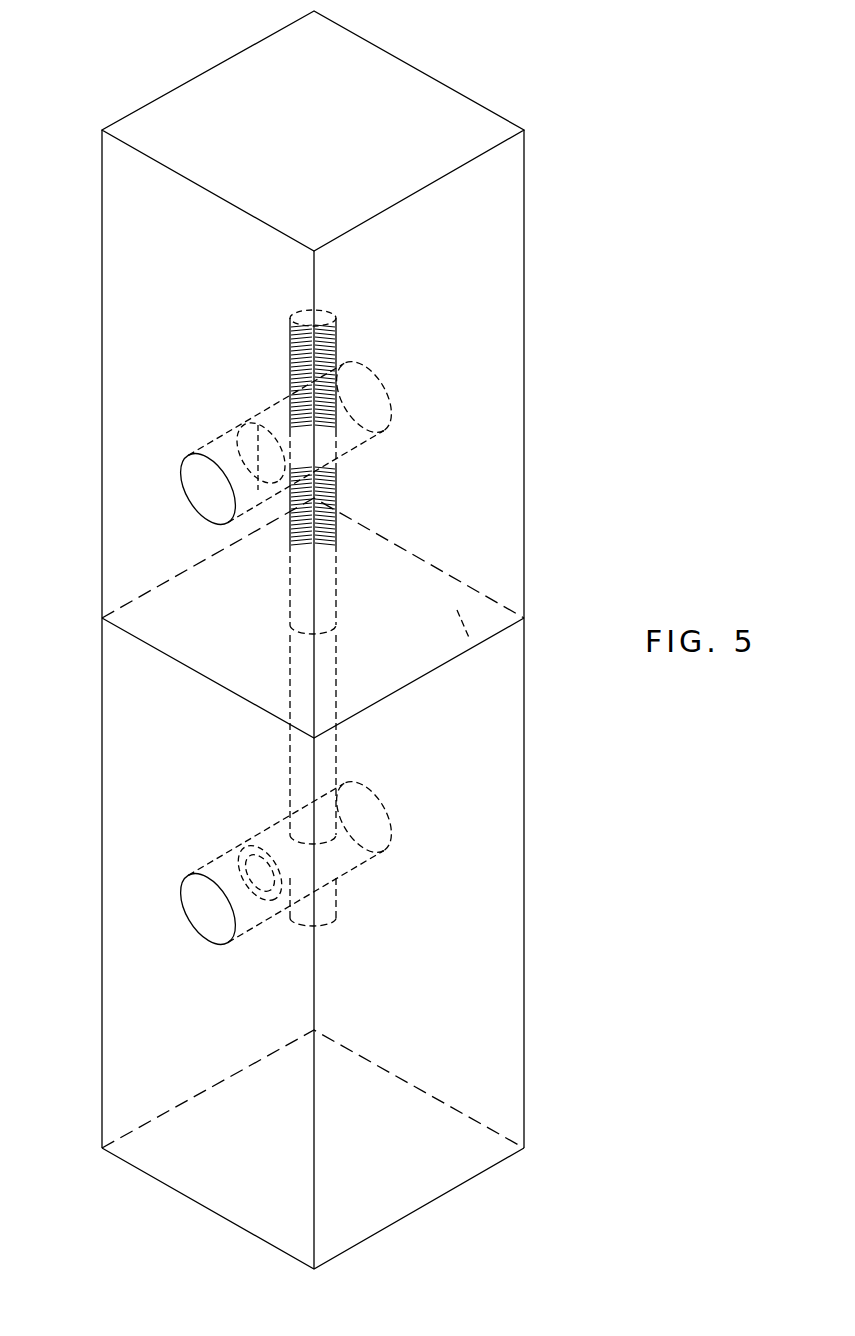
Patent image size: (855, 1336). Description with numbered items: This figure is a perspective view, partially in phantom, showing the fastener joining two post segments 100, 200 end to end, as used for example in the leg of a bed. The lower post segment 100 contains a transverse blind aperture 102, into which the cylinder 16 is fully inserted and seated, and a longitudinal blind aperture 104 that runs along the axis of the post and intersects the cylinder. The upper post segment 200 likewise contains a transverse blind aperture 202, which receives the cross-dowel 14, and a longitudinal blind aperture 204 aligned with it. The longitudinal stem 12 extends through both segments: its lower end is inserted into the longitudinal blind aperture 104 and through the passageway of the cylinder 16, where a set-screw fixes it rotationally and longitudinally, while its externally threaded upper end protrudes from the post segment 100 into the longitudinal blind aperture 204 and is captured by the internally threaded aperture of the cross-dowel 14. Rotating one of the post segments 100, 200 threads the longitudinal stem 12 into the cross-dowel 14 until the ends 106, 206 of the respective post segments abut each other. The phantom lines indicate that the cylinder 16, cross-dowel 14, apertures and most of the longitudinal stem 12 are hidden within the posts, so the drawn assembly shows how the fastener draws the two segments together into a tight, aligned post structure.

The longitudinal stem 12 is at (290, 595).
The cross-dowel 14 is at (366, 370).
The cylinder 16 is at (373, 855).
The post segment 100 is at (498, 960).
The transverse blind aperture 102 is at (193, 912).
The longitudinal blind aperture 104 is at (337, 767).
The end 106 is at (473, 643).
The post segment 200 is at (503, 363).
The transverse blind aperture 202 is at (193, 492).
The longitudinal blind aperture 204 is at (336, 557).
The end 206 is at (493, 615).